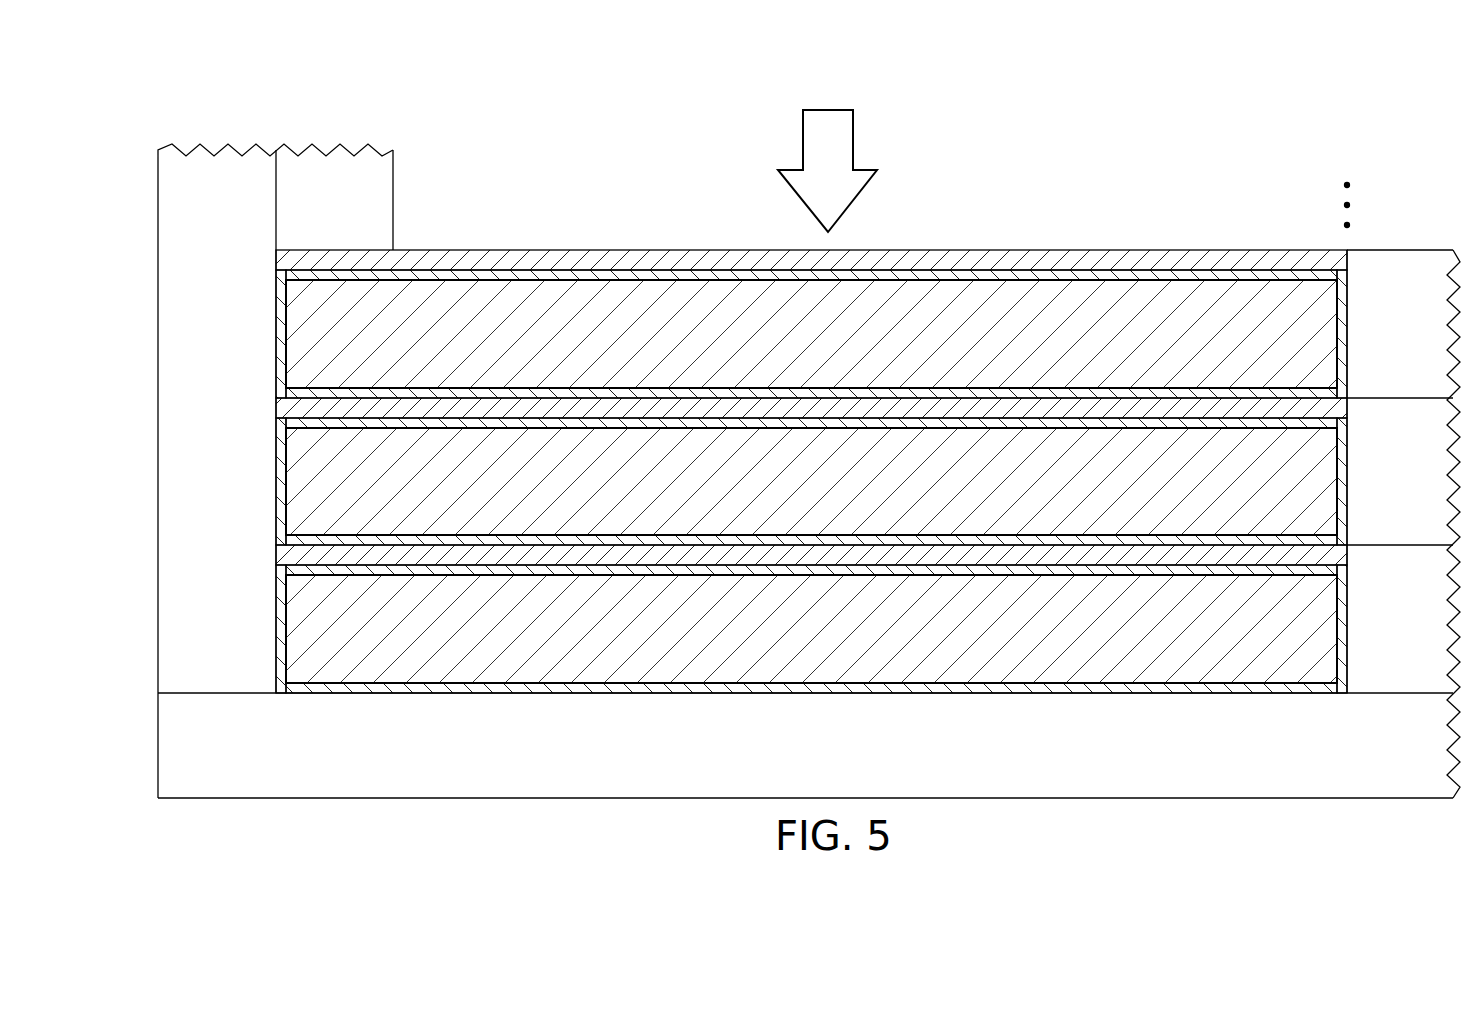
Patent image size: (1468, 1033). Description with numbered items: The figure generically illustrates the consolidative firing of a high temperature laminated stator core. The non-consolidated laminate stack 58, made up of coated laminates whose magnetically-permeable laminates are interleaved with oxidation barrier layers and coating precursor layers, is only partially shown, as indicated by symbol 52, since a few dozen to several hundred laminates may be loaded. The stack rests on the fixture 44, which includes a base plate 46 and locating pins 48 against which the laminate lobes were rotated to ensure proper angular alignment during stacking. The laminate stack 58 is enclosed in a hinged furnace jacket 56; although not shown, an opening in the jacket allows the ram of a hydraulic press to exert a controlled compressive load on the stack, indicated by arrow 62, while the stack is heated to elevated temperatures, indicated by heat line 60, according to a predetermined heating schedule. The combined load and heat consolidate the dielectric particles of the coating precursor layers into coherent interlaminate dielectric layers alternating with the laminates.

The fixture 44 is at (157, 728).
The base plate 46 is at (820, 755).
The locating pins 48 is at (388, 205).
The symbol 52 is at (1360, 150).
The hinged furnace jacket 56 is at (158, 200).
The laminate stack 58 is at (310, 248).
The heat line 60 is at (477, 228).
The arrow 62 is at (828, 110).